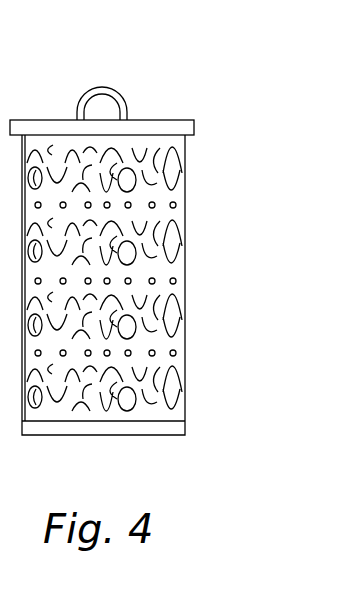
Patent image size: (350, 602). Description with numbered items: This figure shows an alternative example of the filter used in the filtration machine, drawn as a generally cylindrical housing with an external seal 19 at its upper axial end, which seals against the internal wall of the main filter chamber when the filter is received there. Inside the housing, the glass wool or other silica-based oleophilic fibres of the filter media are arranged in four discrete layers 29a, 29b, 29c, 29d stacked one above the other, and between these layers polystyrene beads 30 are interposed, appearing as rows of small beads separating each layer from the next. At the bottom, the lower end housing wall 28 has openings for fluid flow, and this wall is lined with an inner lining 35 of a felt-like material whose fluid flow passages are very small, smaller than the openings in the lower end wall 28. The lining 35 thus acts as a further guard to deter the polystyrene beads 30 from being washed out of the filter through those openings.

The external seal 19 is at (160, 127).
The lower end housing wall 28 is at (172, 435).
The first layer of oleophilic fibres 29a is at (153, 163).
The second layer of oleophilic fibres 29b is at (153, 238).
The third layer of oleophilic fibres 29c is at (143, 318).
The fourth layer of oleophilic fibres 29d is at (147, 396).
The polystyrene beads 30 is at (155, 205).
The inner lining 35 is at (45, 430).